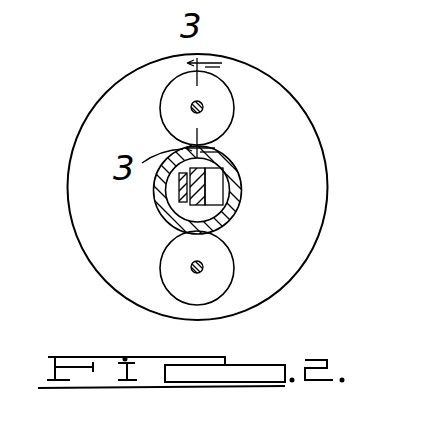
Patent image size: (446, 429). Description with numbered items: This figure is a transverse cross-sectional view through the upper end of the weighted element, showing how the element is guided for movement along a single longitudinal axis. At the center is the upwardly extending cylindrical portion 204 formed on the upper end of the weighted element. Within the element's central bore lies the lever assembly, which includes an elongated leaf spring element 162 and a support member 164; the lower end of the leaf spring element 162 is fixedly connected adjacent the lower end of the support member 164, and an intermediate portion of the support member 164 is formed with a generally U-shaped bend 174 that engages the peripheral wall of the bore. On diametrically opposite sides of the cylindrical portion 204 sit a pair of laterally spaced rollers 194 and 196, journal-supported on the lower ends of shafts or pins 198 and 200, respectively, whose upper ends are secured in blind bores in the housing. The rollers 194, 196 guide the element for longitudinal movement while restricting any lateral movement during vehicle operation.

The leaf spring element 162 is at (169, 188).
The support member 164 is at (238, 192).
The U-shaped bend 174 is at (208, 179).
The roller 194 is at (222, 77).
The roller 196 is at (217, 275).
The shaft or pin 198 is at (193, 106).
The shaft or pin 200 is at (192, 265).
The cylindrical portion 204 is at (222, 192).